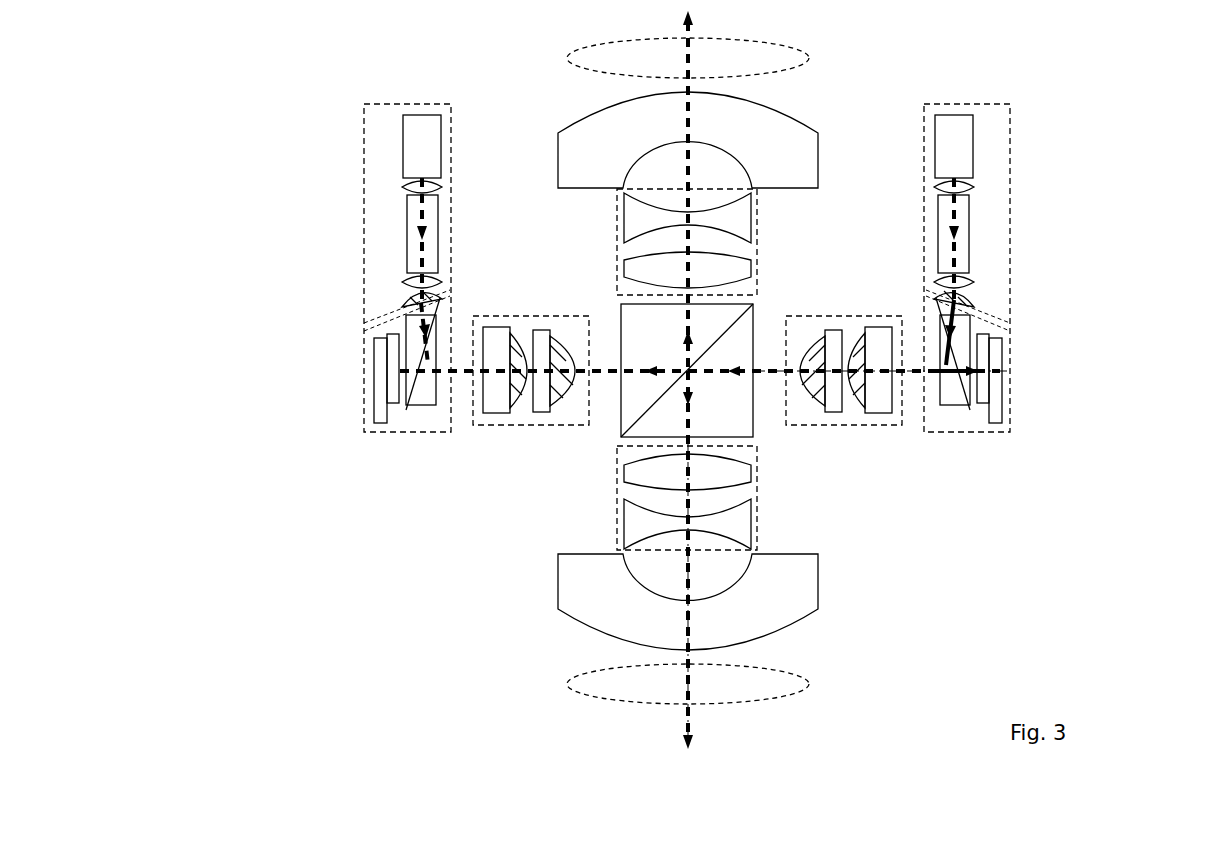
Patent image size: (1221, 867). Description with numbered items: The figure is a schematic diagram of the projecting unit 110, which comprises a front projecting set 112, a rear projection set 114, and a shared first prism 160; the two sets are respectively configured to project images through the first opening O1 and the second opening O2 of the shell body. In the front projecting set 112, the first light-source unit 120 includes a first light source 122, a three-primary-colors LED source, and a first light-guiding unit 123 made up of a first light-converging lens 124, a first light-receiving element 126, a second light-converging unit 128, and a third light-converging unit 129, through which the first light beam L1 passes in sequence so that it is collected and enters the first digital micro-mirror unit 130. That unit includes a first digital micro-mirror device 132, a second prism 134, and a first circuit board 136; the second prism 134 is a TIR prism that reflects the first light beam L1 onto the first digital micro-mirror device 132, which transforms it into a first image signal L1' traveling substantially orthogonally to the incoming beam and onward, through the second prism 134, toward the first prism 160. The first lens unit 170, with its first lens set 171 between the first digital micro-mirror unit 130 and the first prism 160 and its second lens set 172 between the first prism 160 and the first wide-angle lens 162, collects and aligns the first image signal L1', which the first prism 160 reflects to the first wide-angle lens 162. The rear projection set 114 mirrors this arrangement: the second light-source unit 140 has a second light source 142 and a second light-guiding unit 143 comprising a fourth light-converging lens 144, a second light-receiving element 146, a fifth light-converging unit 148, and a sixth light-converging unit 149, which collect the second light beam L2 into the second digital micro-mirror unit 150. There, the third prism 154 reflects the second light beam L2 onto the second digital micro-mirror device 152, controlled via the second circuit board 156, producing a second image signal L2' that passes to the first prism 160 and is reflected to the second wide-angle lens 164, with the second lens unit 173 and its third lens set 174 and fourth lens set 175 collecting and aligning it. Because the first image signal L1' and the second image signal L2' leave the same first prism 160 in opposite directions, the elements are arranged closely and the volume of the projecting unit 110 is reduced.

The projecting unit 110 is at (228, 83).
The front projecting set 112 is at (245, 349).
The rear projection set 114 is at (1110, 341).
The first light-source unit 120 is at (339, 268).
The first light source 122 is at (403, 155).
The first light-guiding unit 123 is at (335, 244).
The first light-converging lens 124 is at (402, 189).
The first light-receiving element 126 is at (414, 245).
The second light-converging unit 128 is at (402, 282).
The third light-converging unit 129 is at (404, 300).
The first digital micro-mirror unit 130 is at (359, 405).
The first digital micro-mirror device 132 is at (393, 404).
The second prism 134 is at (425, 403).
The first circuit board 136 is at (380, 424).
The second light-source unit 140 is at (1033, 268).
The second light source 142 is at (974, 155).
The second light-guiding unit 143 is at (1038, 244).
The fourth light-converging lens 144 is at (975, 190).
The second light-receiving element 146 is at (960, 245).
The fifth light-converging unit 148 is at (975, 283).
The sixth light-converging unit 149 is at (1008, 289).
The second digital micro-mirror unit 150 is at (1023, 404).
The second digital micro-mirror device 152 is at (980, 404).
The third prism 154 is at (947, 403).
The second circuit board 156 is at (997, 424).
The first prism 160 is at (626, 418).
The first wide-angle lens 162 is at (803, 150).
The second wide-angle lens 164 is at (805, 582).
The first lens unit 170 is at (613, 346).
The first lens set 171 is at (563, 304).
The second lens set 172 is at (608, 222).
The second lens unit 173 is at (767, 433).
The third lens set 174 is at (813, 435).
The fourth lens set 175 is at (770, 520).
The first opening O1 is at (820, 58).
The second opening O2 is at (820, 683).
The first light beam L1 is at (473, 172).
The first image signal L1' is at (475, 463).
The second light beam L2 is at (903, 188).
The second image signal L2' is at (784, 295).